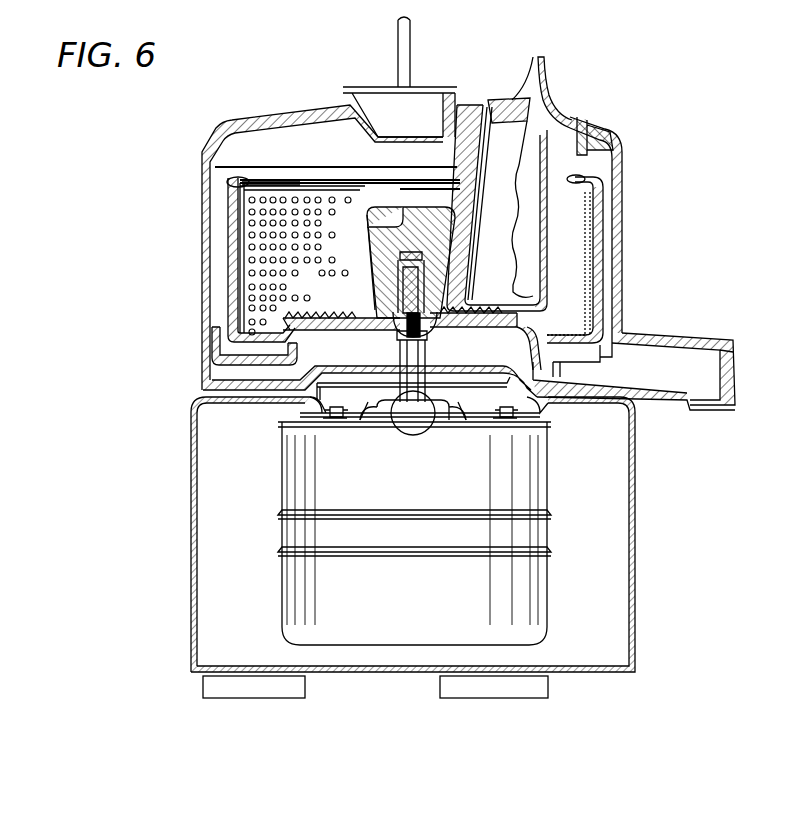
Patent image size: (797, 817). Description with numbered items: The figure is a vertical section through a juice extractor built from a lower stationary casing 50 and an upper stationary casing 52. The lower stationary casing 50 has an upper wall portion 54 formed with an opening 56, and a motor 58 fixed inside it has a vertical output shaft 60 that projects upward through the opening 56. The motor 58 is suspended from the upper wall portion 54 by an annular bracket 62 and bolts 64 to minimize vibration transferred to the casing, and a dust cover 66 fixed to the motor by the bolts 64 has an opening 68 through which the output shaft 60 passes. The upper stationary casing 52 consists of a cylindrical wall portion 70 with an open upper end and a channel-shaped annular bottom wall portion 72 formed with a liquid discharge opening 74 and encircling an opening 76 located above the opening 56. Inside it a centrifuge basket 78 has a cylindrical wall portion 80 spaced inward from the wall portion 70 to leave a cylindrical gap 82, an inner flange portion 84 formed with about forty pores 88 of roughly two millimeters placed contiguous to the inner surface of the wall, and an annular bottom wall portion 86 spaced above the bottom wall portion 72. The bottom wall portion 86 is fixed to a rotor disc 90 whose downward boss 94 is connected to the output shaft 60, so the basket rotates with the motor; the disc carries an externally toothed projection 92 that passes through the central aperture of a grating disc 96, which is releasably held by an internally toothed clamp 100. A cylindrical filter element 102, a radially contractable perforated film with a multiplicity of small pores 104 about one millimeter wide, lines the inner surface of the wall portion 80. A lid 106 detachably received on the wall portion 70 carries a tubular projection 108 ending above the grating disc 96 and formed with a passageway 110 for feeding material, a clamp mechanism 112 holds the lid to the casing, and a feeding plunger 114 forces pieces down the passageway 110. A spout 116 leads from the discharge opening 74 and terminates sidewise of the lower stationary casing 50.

The lower stationary casing 50 is at (637, 568).
The upper stationary casing 52 is at (415, 229).
The upper wall portion 54 is at (243, 403).
The opening 56 is at (350, 383).
The motor 58 is at (436, 595).
The output shaft 60 is at (422, 424).
The annular bracket 62 is at (537, 407).
The bolts 64 is at (336, 421).
The dust cover 66 is at (370, 415).
The opening 68 is at (382, 424).
The cylindrical wall portion 70 is at (204, 200).
The annular bottom wall portion 72 is at (235, 386).
The liquid discharge opening 74 is at (585, 373).
The opening 76 is at (346, 366).
The centrifuge basket 78 is at (605, 250).
The cylindrical wall portion 80 is at (228, 238).
The cylindrical gap 82 is at (260, 235).
The inner flange portion 84 is at (253, 180).
The annular bottom wall portion 86 is at (245, 350).
The pores 88 is at (238, 180).
The rotor disc 90 is at (483, 327).
The externally toothed projection 92 is at (428, 290).
The boss 94 is at (427, 350).
The grating disc 96 is at (360, 318).
The internally toothed clamp 100 is at (407, 200).
The cylindrical filter element 102 is at (594, 220).
The pores 104 is at (305, 198).
The lid 106 is at (333, 108).
The tubular projection 108 is at (584, 132).
The passageway 110 is at (508, 100).
The clamp mechanism 112 is at (388, 85).
The feeding plunger 114 is at (548, 80).
The spout 116 is at (697, 337).